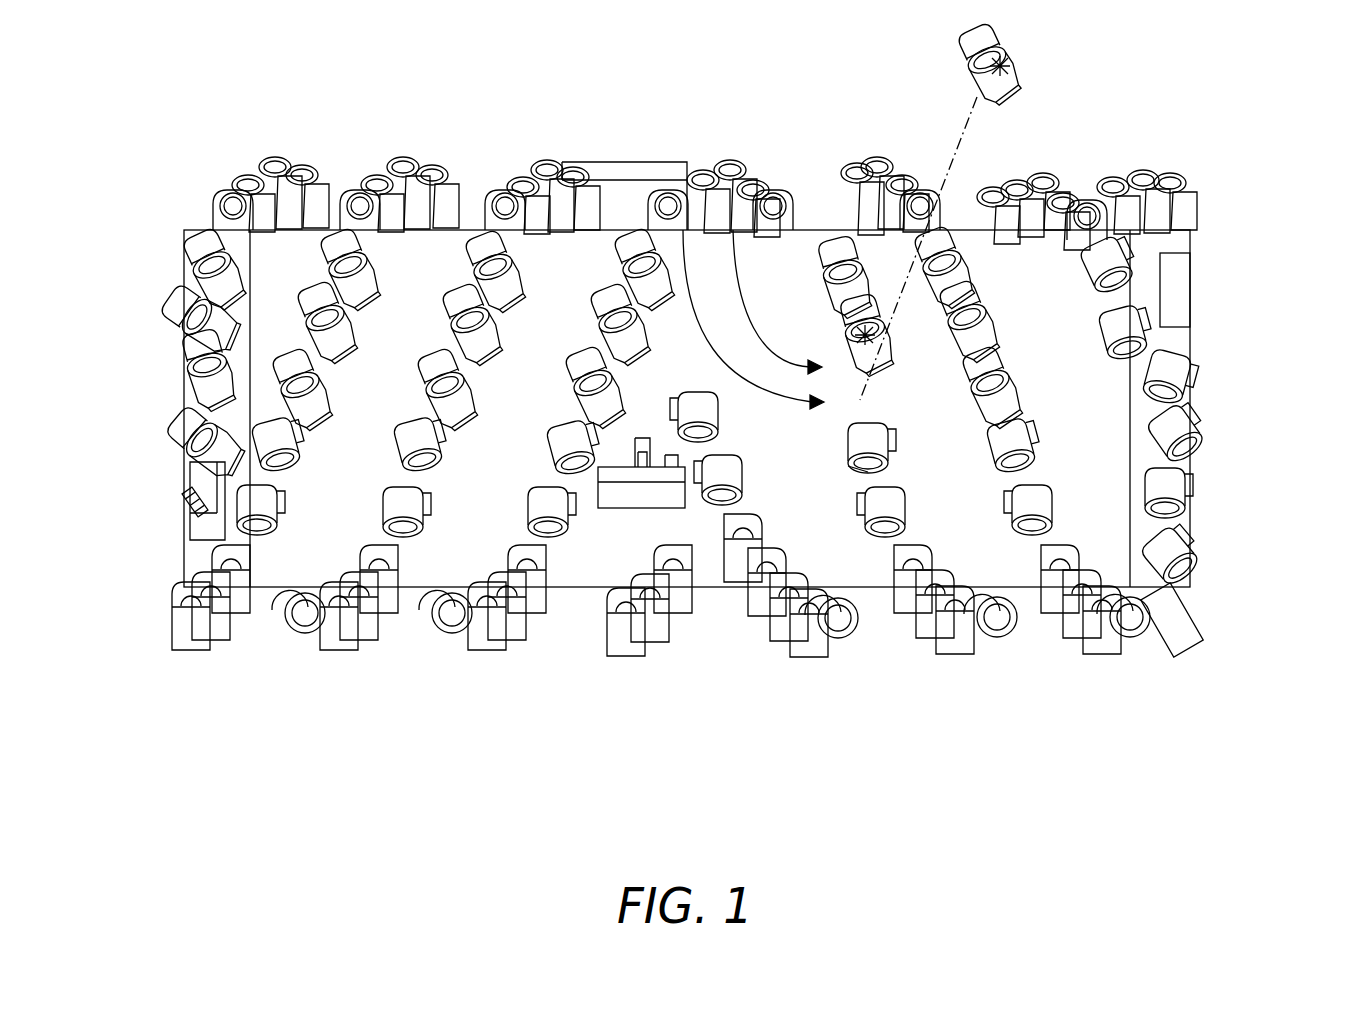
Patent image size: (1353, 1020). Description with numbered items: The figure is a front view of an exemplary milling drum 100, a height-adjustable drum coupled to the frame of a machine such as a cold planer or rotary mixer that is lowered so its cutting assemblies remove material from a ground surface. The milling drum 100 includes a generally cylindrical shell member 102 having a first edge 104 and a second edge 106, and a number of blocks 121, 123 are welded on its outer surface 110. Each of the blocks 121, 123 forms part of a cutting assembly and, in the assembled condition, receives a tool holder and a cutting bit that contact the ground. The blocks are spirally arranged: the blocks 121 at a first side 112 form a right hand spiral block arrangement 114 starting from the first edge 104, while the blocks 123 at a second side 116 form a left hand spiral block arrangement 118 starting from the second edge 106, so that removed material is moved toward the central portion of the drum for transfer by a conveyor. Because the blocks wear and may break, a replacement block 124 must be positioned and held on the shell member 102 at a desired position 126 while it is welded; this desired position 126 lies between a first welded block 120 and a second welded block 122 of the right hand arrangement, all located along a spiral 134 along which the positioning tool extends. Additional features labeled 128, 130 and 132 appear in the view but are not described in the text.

The milling drum 100 is at (1268, 102).
The shell member 102 is at (1015, 253).
The first edge 104 is at (1204, 361).
The second edge 106 is at (176, 336).
The outer surface 110 is at (778, 270).
The first side 112 is at (984, 686).
The right hand spiral block arrangement 114 is at (1020, 290).
The second side 116 is at (454, 692).
The left hand spiral block arrangement 118 is at (432, 334).
The first welded block 120 is at (840, 275).
The blocks 121 is at (1137, 327).
The second welded block 122 is at (868, 440).
The blocks 123 is at (462, 442).
The replacement block 124 is at (1007, 36).
The desired position 126 is at (683, 230).
The seat position 128 is at (812, 288).
The seat mount 130 is at (858, 476).
The mount marker 132 is at (1006, 74).
The spiral 134 is at (733, 230).